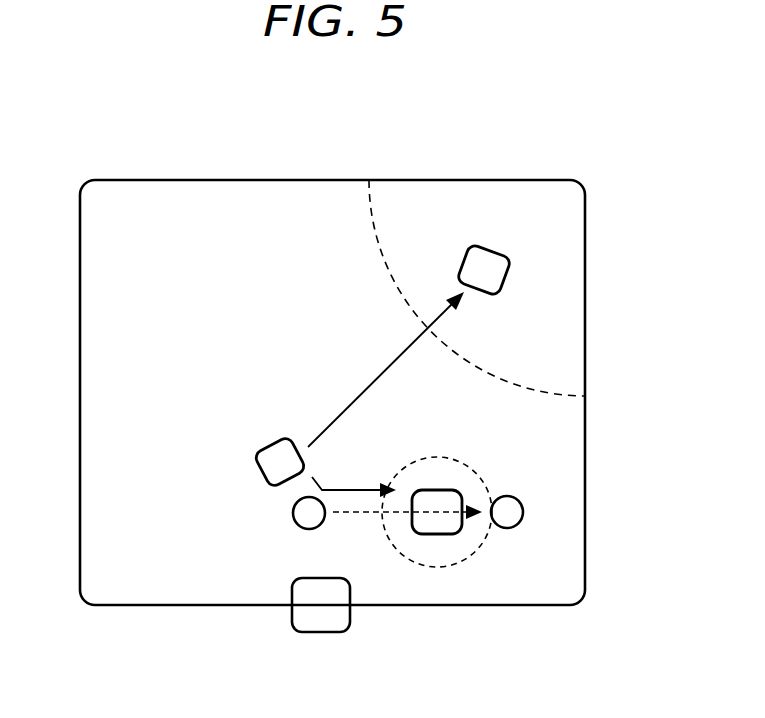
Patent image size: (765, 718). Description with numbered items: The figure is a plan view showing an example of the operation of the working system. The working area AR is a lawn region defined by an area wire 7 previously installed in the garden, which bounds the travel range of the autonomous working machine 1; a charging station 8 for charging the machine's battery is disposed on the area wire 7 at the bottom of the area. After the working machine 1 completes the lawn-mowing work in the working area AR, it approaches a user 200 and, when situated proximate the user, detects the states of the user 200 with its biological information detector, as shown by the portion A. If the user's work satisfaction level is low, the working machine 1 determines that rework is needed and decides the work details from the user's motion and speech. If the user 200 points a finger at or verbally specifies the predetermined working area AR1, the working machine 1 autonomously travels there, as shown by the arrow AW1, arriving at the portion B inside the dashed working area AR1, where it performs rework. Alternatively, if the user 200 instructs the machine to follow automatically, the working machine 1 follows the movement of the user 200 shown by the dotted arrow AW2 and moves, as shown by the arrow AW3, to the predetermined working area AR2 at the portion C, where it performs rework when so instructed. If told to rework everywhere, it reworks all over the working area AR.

The working machine 1 is at (268, 438).
The area wire 7 is at (585, 323).
The charging station 8 is at (321, 632).
The user 200 is at (293, 513).
The working area AR is at (157, 266).
The predetermined working area AR1 is at (483, 213).
The predetermined working area AR2 is at (453, 542).
The arrow AW1 is at (367, 388).
The dotted arrow AW2 is at (355, 516).
The arrow AW3 is at (352, 489).
The portion A is at (246, 467).
The portion B is at (516, 292).
The portion C is at (416, 543).